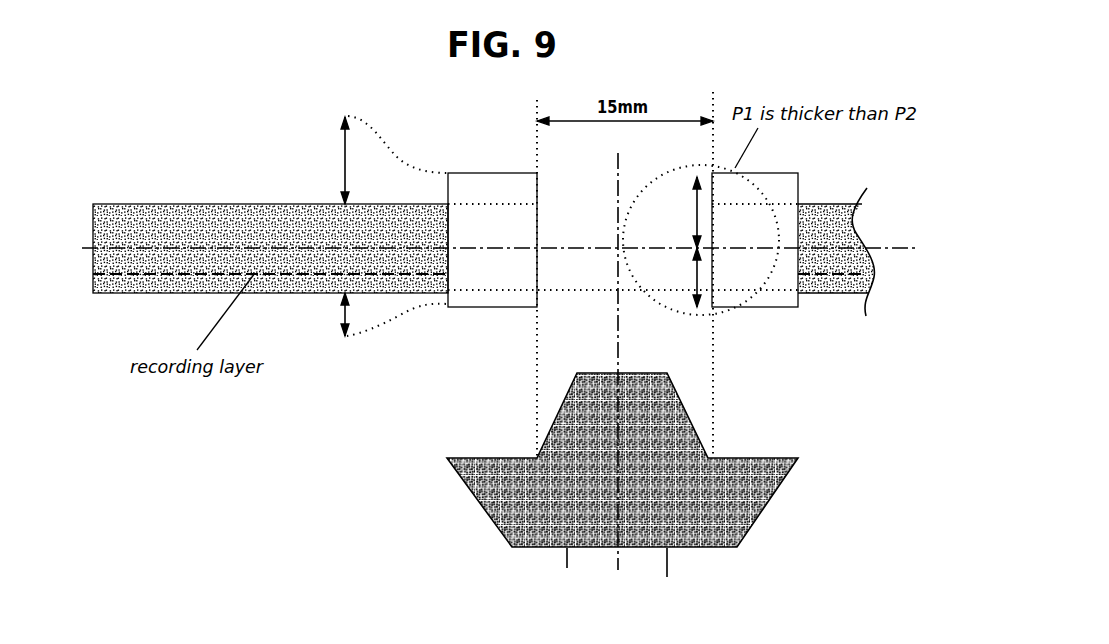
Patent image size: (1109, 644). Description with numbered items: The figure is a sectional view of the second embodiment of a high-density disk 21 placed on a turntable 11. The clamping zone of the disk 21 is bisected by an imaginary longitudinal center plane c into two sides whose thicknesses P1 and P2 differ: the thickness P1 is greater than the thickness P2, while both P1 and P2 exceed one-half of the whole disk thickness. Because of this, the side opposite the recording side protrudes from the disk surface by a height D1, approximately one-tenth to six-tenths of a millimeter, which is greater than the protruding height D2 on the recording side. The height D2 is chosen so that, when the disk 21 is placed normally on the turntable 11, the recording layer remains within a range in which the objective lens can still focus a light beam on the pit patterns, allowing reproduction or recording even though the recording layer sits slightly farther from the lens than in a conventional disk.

The high-density disk 21 is at (240, 202).
The turntable 11 is at (697, 425).
The longitudinal center plane c is at (912, 248).
The protruding height D1 is at (375, 160).
The protruding height D2 is at (375, 314).
The thickness P1 is at (678, 212).
The thickness P2 is at (678, 277).